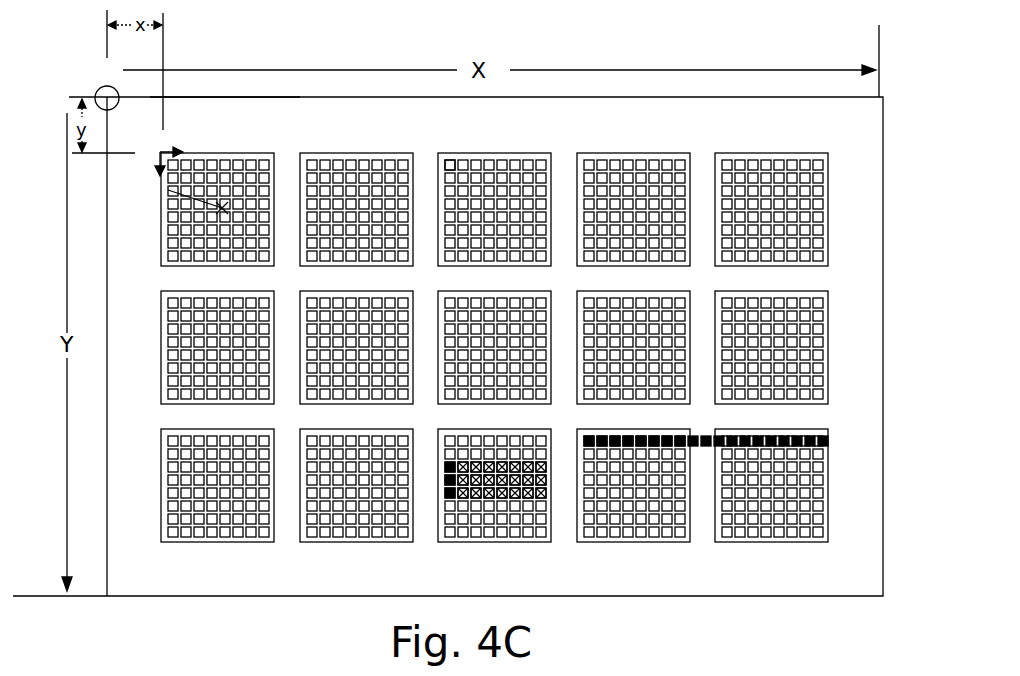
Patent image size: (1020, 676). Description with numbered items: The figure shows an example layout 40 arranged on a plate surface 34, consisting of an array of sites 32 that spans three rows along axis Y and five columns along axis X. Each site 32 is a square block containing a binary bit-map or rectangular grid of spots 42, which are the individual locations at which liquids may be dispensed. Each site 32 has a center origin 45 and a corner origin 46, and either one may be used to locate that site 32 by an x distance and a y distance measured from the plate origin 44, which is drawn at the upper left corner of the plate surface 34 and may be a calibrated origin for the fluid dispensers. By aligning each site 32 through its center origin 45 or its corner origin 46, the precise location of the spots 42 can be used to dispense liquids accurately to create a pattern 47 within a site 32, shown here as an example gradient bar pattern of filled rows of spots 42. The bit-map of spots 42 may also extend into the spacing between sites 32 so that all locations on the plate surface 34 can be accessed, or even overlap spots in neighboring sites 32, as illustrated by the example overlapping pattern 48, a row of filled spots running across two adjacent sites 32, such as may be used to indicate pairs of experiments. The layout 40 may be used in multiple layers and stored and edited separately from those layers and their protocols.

The layout 40 is at (630, 47).
The plate surface 34 is at (203, 97).
The plate origin 44 is at (98, 88).
The site 32 is at (245, 153).
The spot 42 is at (470, 156).
The center origin 45 is at (168, 190).
The corner origin 46 is at (160, 150).
The pattern 47 is at (435, 468).
The overlapping pattern 48 is at (586, 434).